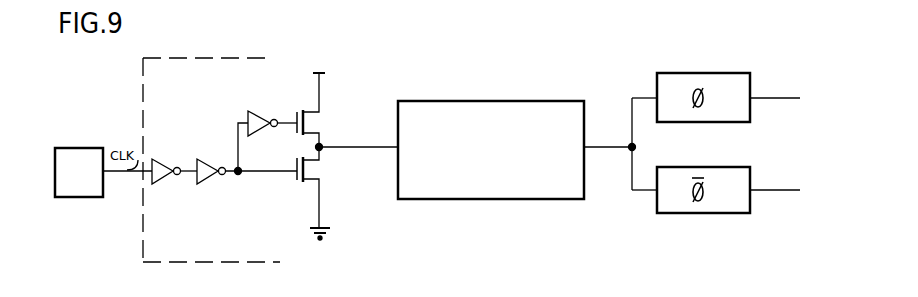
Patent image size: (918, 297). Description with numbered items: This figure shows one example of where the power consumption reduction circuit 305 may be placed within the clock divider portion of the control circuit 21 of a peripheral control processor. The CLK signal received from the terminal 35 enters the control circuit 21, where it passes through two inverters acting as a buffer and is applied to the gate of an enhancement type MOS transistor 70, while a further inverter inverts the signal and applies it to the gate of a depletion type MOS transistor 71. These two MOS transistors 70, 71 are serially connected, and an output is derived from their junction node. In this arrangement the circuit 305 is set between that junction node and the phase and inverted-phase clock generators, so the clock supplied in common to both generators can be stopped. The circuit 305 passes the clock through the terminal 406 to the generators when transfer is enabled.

The terminal 35 is at (78, 146).
The control circuit 21 is at (251, 149).
The depletion type MOS transistor 71 is at (314, 121).
The enhancement type MOS transistor 70 is at (314, 176).
The power consumption reduction circuit 305 is at (456, 101).
The terminal 406 is at (621, 129).